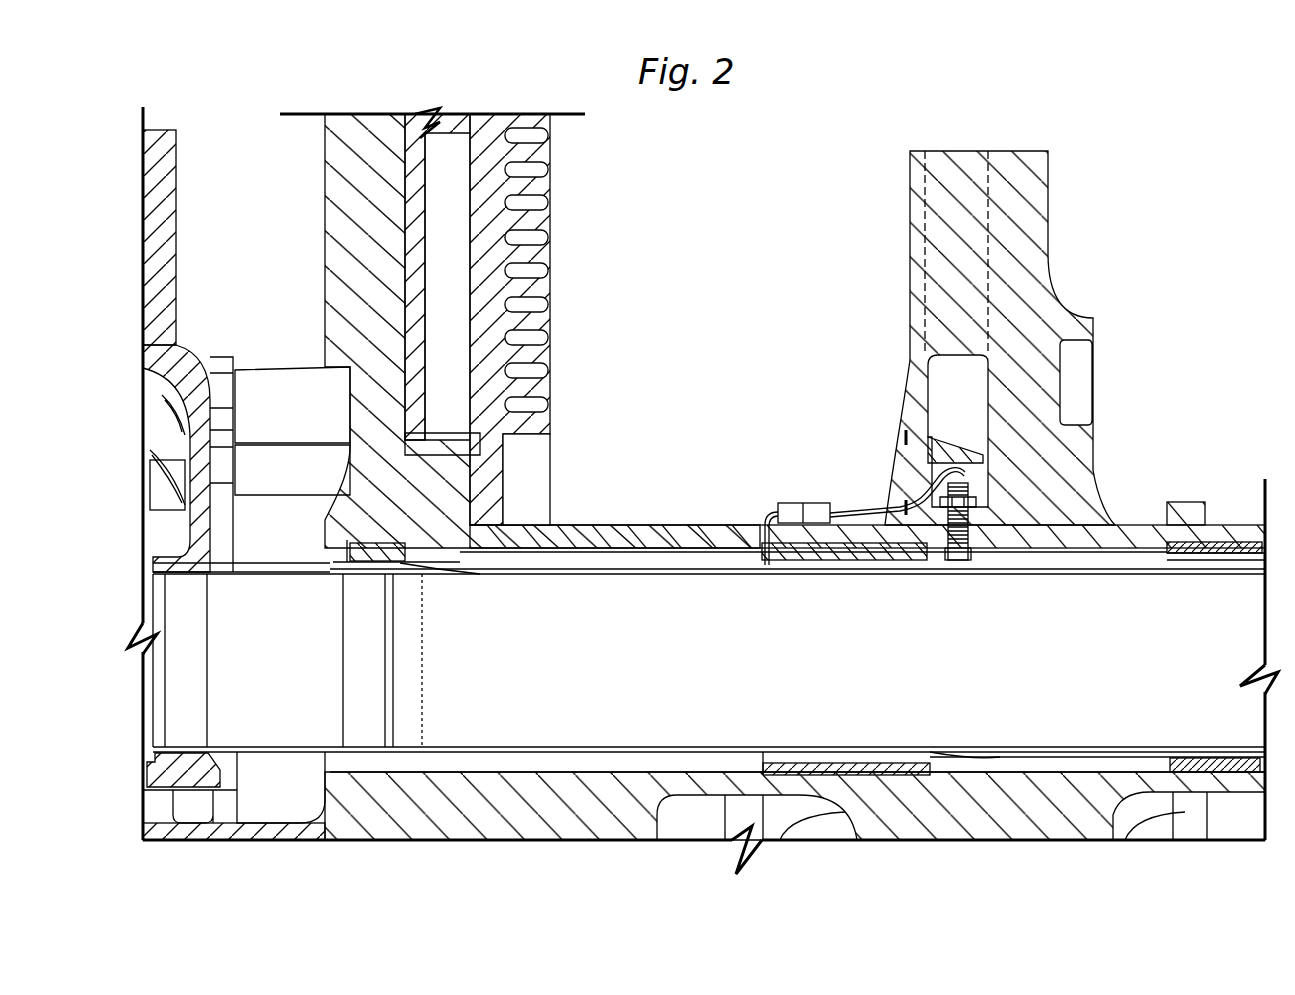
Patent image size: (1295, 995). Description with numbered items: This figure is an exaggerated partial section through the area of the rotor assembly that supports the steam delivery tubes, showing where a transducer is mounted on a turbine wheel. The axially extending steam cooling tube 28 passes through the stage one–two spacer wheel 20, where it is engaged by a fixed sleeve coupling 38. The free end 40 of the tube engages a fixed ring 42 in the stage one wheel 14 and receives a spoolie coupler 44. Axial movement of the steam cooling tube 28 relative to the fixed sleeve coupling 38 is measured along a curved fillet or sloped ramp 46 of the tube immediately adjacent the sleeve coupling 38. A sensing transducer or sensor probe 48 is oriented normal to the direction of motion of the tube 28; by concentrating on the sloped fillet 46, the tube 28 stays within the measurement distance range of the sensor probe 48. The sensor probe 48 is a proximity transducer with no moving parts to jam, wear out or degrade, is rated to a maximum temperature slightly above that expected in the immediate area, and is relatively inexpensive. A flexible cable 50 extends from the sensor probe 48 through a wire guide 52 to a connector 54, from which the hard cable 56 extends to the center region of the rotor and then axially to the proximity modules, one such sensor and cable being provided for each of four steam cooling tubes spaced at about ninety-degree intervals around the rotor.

The stage 1 wheel 14 is at (365, 143).
The stage 1–2 spacer wheel 20 is at (1003, 180).
The steam cooling tube 28 is at (1135, 577).
The fixed sleeve coupling 38 is at (808, 563).
The free end 40 is at (335, 525).
The fixed ring 42 is at (393, 847).
The spoolie coupler 44 is at (253, 752).
The fillet 46 is at (940, 578).
The sensor probe 48 is at (967, 520).
The flexible cable 50 is at (880, 507).
The wire guide 52 is at (927, 453).
The connector 54 is at (812, 503).
The hard cable 56 is at (765, 512).